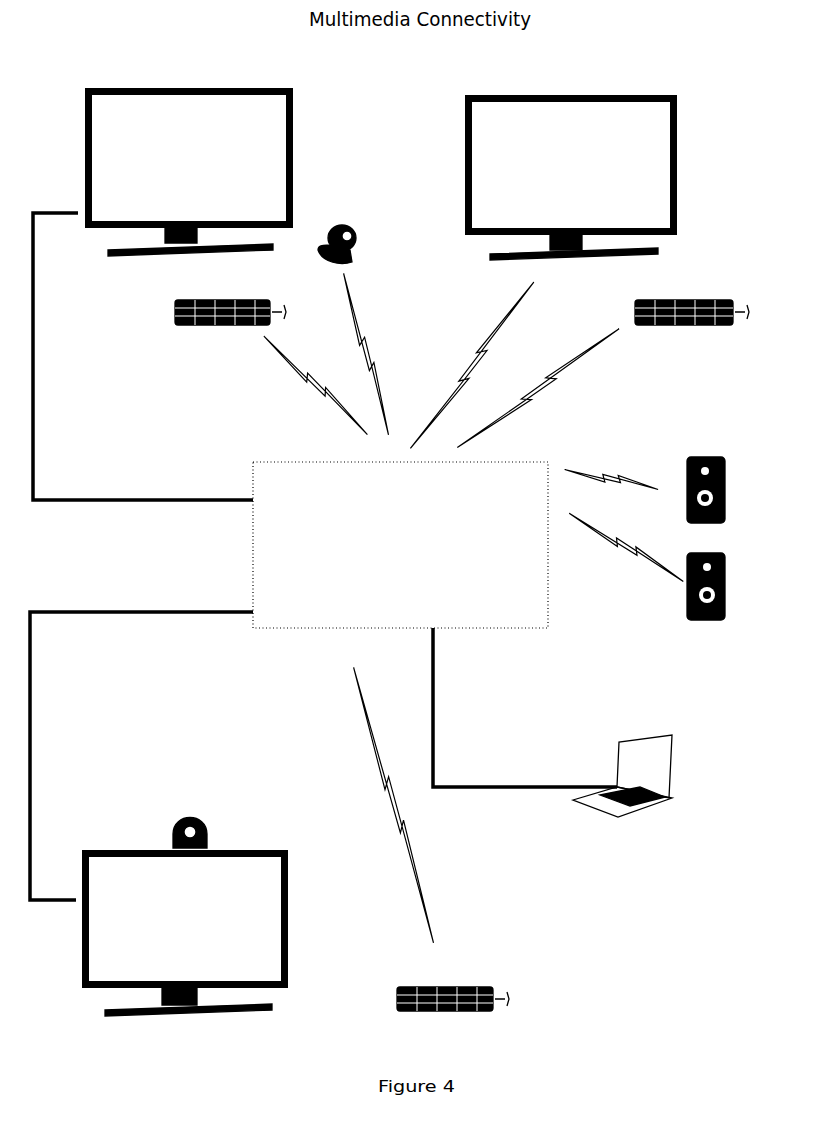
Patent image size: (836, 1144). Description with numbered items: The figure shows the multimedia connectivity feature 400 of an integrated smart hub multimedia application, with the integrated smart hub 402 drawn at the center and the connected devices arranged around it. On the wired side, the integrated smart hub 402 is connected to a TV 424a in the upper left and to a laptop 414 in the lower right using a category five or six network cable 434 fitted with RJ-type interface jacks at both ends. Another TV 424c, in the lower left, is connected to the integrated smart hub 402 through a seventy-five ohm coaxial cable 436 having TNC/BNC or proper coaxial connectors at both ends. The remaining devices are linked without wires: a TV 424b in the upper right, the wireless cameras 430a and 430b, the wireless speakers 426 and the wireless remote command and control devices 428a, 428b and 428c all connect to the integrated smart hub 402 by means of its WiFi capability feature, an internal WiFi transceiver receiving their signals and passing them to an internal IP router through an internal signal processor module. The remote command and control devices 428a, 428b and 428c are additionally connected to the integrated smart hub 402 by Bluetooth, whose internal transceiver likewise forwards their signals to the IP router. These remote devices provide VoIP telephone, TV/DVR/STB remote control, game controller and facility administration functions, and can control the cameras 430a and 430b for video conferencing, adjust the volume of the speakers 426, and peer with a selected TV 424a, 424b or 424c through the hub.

The multimedia connectivity feature 400 is at (400, 116).
The integrated smart hub 402 is at (478, 630).
The laptop 414 is at (672, 805).
The TV 424a is at (253, 84).
The TV 424b is at (660, 95).
The TV 424c is at (232, 840).
The wireless speakers 426 is at (725, 478).
The wireless remote command and control device 428a is at (198, 328).
The wireless remote command and control device 428b is at (710, 327).
The wireless remote command and control device 428c is at (478, 983).
The wireless camera 430a is at (345, 225).
The wireless camera 430b is at (172, 830).
The CAT 5/6 cable 434 is at (36, 260).
The coaxial cable 436 is at (35, 636).